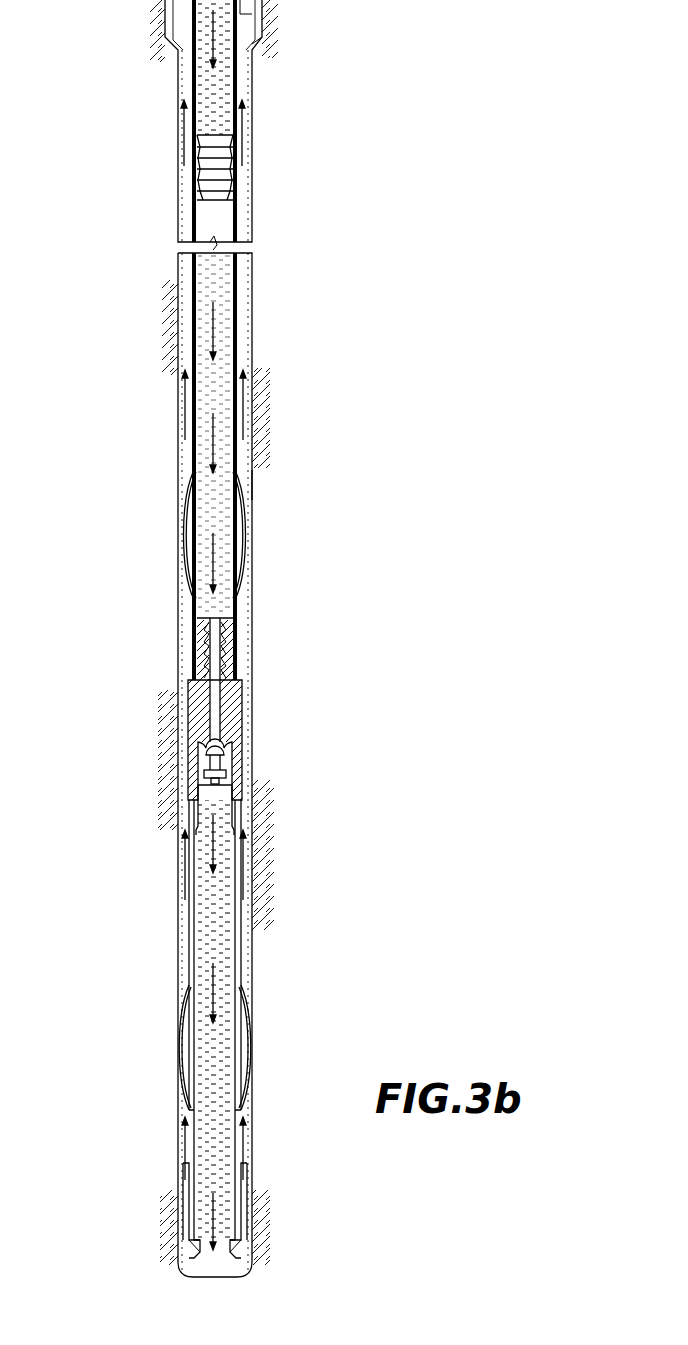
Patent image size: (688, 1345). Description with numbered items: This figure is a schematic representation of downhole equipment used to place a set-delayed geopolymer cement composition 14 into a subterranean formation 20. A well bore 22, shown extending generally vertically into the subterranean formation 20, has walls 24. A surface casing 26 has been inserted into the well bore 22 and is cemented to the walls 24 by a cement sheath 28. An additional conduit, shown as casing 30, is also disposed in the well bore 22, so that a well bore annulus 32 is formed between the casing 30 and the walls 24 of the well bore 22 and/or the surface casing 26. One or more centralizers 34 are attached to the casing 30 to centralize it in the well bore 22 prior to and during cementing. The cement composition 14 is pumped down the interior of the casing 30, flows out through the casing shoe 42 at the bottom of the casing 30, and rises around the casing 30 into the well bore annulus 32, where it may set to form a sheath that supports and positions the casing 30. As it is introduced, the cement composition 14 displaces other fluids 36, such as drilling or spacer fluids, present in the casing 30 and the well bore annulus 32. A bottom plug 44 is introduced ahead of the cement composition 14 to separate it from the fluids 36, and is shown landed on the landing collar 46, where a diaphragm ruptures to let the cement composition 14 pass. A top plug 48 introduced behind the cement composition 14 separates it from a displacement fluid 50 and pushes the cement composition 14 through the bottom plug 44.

The cement composition 14 is at (213, 312).
The subterranean formation 20 is at (363, 630).
The well bore 22 is at (268, 488).
The walls 24 is at (248, 217).
The surface casing 26 is at (246, 12).
The cement sheath 28 is at (257, 50).
The casing 30 is at (237, 340).
The well bore annulus 32 is at (182, 440).
The centralizers 34 is at (190, 1000).
The fluids 36 is at (212, 820).
The casing shoe 42 is at (190, 1200).
The bottom plug 44 is at (193, 638).
The landing collar 46 is at (190, 712).
The top plug 48 is at (196, 205).
The displacement fluid 50 is at (205, 85).